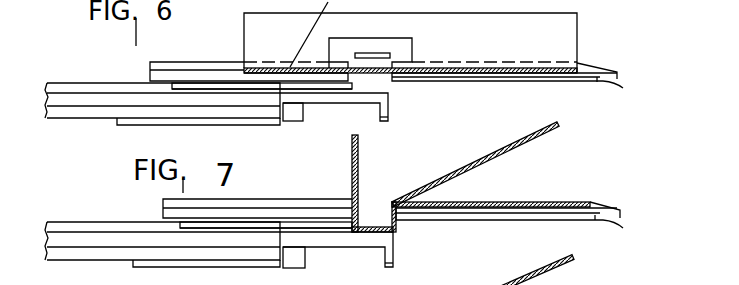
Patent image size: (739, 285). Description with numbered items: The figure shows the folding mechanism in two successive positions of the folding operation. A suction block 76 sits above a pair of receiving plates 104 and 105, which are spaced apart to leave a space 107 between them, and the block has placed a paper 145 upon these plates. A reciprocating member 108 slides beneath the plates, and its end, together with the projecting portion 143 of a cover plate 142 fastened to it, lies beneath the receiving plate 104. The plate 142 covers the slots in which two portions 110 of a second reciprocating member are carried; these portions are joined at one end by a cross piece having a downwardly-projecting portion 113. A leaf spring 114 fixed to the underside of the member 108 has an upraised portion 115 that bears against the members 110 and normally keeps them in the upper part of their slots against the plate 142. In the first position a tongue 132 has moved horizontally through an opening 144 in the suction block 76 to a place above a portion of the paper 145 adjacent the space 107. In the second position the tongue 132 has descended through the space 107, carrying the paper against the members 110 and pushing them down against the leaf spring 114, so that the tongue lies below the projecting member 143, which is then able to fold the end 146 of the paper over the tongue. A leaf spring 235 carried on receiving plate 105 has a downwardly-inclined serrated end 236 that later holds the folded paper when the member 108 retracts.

In FIG. 6, the suction block 76 is at (570, 30).
In FIG. 6, the receiving plate 104 is at (167, 72).
In FIG. 7, the receiving plate 104 is at (162, 203).
In FIG. 6, the receiving plate 105 is at (500, 79).
In FIG. 7, the receiving plate 105 is at (527, 217).
In FIG. 6, the space 107 is at (382, 79).
In FIG. 7, the space 107 is at (381, 283).
In FIG. 6, the reciprocating member 108 is at (80, 115).
In FIG. 7, the reciprocating member 108 is at (80, 261).
In FIG. 6, the portions of second reciprocating member 110 is at (355, 98).
In FIG. 7, the portions of second reciprocating member 110 is at (357, 238).
In FIG. 6, the downwardly-projecting portion 113 is at (390, 118).
In FIG. 7, the downwardly-projecting portion 113 is at (395, 266).
In FIG. 6, the leaf spring 114 is at (173, 121).
In FIG. 7, the leaf spring 114 is at (178, 263).
In FIG. 6, the upraised portion 115 is at (295, 119).
In FIG. 7, the upraised portion 115 is at (303, 255).
In FIG. 6, the tongue 132 is at (385, 56).
In FIG. 7, the tongue 132 is at (372, 226).
In FIG. 6, the plate 142 is at (207, 82).
In FIG. 7, the plate 142 is at (240, 222).
In FIG. 6, the projecting portion 143 is at (328, 86).
In FIG. 7, the projecting portion 143 is at (315, 221).
In FIG. 6, the opening 144 is at (350, 47).
In FIG. 7, the paper 145 is at (558, 128).
In FIG. 7, the end of the paper 146 is at (351, 163).
In FIG. 6, the leaf spring 235 is at (585, 68).
In FIG. 7, the leaf spring 235 is at (585, 208).
In FIG. 6, the downwardly-inclined serrated end 236 is at (623, 86).
In FIG. 7, the downwardly-inclined serrated end 236 is at (623, 227).